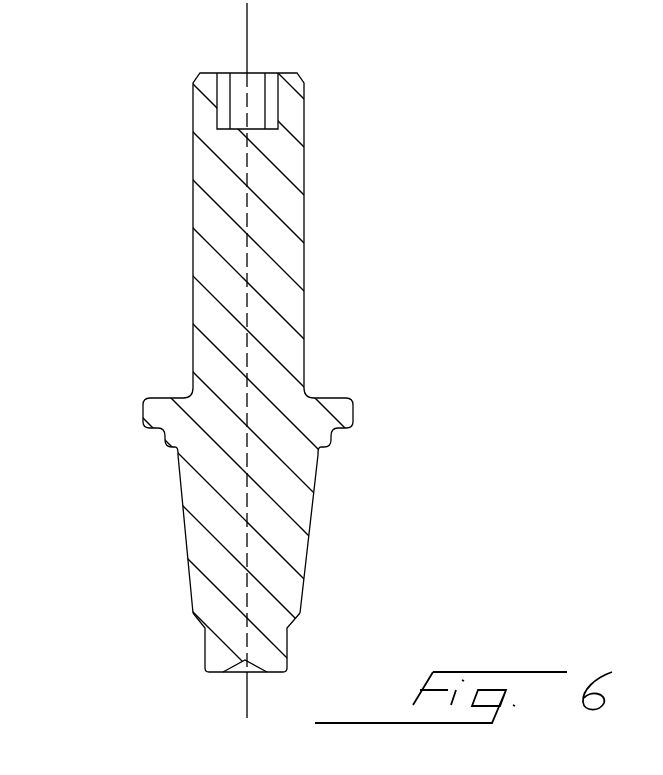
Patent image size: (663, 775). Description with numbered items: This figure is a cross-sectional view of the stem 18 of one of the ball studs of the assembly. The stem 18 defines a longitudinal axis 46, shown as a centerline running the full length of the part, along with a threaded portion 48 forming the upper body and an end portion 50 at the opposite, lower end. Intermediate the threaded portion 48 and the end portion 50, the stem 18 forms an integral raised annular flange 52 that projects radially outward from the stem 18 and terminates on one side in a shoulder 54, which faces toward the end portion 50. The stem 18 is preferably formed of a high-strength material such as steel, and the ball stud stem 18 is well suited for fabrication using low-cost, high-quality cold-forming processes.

The stem 18 is at (163, 291).
The longitudinal axis 46 is at (247, 40).
The threaded portion 48 is at (292, 213).
The end portion 50 is at (203, 648).
The raised annular flange 52 is at (343, 412).
The shoulder 54 is at (322, 455).